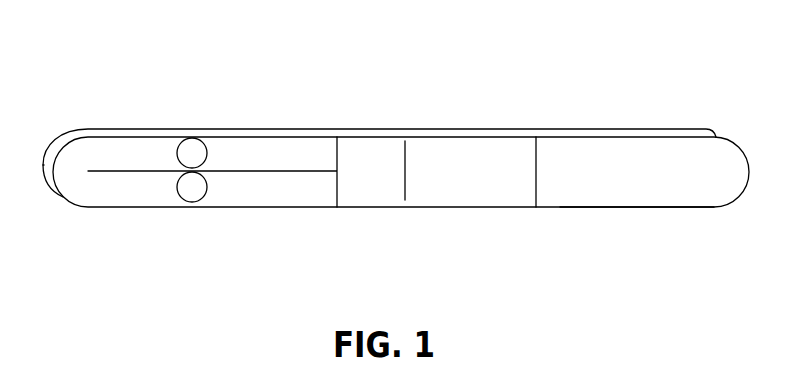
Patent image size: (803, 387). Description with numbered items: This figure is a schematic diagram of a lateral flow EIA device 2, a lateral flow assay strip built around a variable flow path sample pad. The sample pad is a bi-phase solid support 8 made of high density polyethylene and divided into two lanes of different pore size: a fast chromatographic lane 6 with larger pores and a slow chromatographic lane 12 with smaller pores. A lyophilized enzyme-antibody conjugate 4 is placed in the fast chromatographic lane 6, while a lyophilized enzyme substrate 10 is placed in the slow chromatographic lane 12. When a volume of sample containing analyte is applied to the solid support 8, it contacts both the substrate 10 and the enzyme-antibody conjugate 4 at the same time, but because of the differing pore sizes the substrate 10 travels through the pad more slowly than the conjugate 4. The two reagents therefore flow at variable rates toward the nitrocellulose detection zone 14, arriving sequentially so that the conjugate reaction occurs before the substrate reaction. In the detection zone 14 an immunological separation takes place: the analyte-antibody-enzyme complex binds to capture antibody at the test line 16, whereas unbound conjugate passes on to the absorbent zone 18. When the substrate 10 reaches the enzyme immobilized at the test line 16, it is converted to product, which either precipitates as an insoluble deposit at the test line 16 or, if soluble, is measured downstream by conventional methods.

The lateral flow EIA device 2 is at (510, 87).
The enzyme-antibody conjugate 4 is at (200, 198).
The fast chromatographic lane 6 is at (83, 190).
The bi-phase solid support 8 is at (155, 132).
The enzyme substrate 10 is at (173, 157).
The slow chromatographic lane 12 is at (263, 147).
The nitrocellulose detection zone 14 is at (495, 193).
The test line 16 is at (405, 175).
The absorbent zone 18 is at (671, 190).